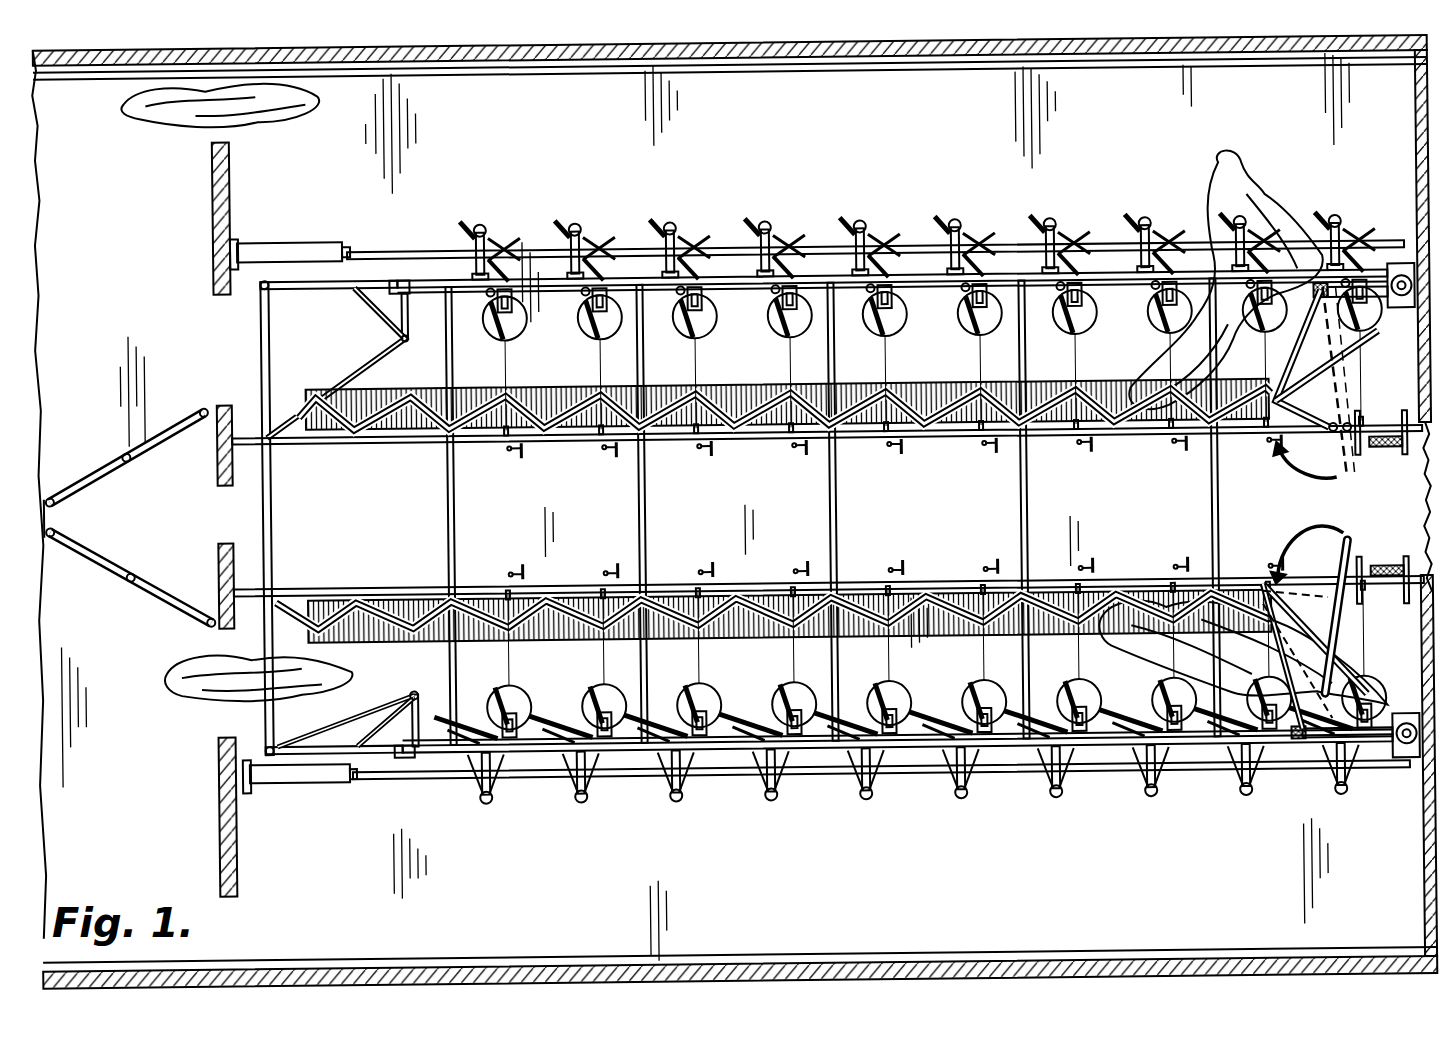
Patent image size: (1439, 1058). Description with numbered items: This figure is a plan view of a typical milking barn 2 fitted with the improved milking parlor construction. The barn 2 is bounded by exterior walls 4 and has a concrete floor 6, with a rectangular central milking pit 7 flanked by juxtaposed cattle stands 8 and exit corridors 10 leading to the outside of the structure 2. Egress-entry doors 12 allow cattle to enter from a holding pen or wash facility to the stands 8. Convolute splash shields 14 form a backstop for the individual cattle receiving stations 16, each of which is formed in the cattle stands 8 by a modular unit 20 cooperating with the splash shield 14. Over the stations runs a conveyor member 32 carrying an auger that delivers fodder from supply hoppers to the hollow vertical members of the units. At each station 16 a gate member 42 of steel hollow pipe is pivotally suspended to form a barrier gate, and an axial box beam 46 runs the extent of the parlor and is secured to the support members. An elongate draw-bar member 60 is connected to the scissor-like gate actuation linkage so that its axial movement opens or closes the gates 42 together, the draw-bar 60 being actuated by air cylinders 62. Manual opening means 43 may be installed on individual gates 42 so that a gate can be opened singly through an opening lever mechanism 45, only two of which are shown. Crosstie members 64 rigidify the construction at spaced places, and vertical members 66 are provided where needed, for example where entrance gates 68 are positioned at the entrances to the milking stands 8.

The milking barn 2 is at (688, 506).
The exterior walls 4 is at (1420, 176).
The concrete floor 6 is at (534, 139).
The central milking pit 7 is at (590, 510).
The cattle stands 8 is at (540, 298).
The exit corridors 10 is at (872, 142).
The egress-entry doors 12 is at (226, 404).
The convolute splash shields 14 is at (372, 420).
The cattle receiving stations 16 is at (930, 305).
The modular unit 20 is at (764, 226).
The conveyor member 32 is at (1385, 307).
The gate member 42 is at (482, 227).
The manual opening means 43 is at (1320, 474).
The opening lever mechanism 45 is at (1288, 388).
The axial box beam 46 is at (585, 302).
The draw-bar member 60 is at (458, 246).
The air cylinders 62 is at (308, 248).
The crosstie members 64 is at (456, 541).
The vertical members 66 is at (410, 292).
The entrance gates 68 is at (269, 340).